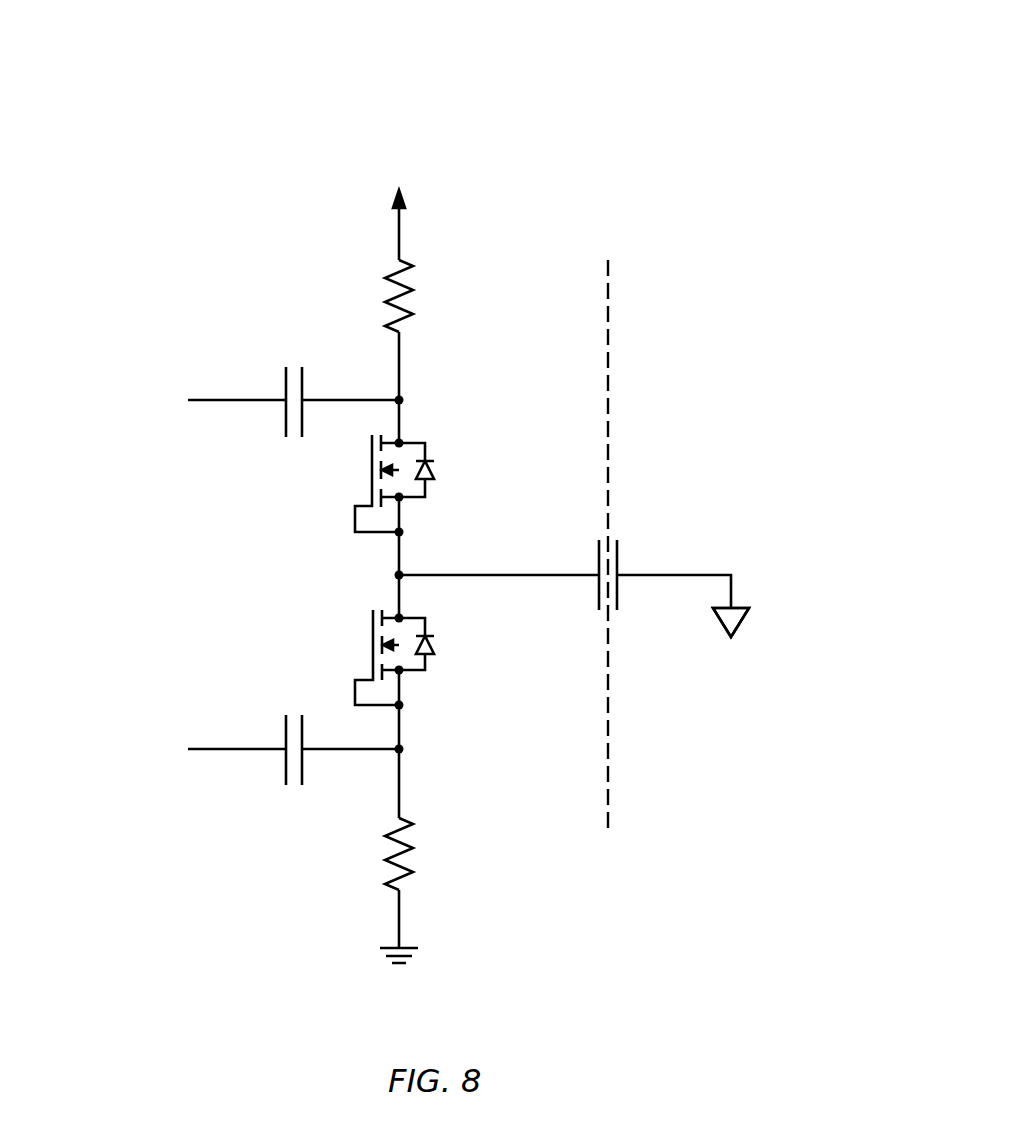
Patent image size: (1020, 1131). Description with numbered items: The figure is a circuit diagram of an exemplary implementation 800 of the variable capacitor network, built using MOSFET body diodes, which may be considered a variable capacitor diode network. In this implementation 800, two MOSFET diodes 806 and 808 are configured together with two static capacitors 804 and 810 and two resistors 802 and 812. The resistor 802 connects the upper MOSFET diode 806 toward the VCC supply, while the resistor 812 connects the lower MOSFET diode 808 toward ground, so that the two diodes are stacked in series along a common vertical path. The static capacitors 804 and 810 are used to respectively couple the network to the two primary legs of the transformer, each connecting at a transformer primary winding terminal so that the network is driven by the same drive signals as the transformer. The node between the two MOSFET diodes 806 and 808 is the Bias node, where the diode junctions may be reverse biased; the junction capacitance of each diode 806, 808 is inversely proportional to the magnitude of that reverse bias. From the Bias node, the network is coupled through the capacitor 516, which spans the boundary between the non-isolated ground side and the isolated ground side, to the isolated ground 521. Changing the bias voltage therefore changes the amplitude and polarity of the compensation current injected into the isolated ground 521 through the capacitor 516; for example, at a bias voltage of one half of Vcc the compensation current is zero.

The implementation of the variable capacitor network 800 is at (608, 90).
The resistor 802 is at (414, 293).
The static capacitor 804 is at (292, 362).
The MOSFET diode 806 is at (407, 470).
The MOSFET diode 808 is at (401, 640).
The static capacitor 810 is at (292, 712).
The resistor 812 is at (414, 850).
The capacitor 516 is at (599, 552).
The isolated ground 521 is at (732, 618).